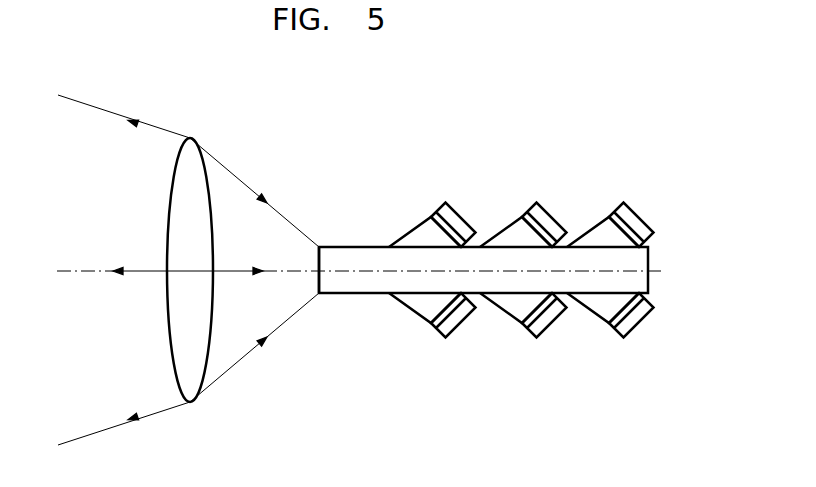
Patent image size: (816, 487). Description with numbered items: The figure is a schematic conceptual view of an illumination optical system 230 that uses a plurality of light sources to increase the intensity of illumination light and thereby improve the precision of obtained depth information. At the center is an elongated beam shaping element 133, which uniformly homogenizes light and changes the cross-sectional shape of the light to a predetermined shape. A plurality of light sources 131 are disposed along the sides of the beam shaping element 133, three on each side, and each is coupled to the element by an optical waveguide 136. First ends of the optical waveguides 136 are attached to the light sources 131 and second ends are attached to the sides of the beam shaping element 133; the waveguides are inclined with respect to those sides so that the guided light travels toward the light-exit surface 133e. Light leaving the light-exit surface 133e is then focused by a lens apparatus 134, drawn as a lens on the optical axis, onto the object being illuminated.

The illumination optical system 230 is at (404, 117).
The light sources 131 is at (628, 215).
The beam shaping element 133 is at (645, 283).
The light-exit surface 133e is at (319, 259).
The lens apparatus 134 is at (190, 137).
The optical waveguides 136 is at (421, 236).